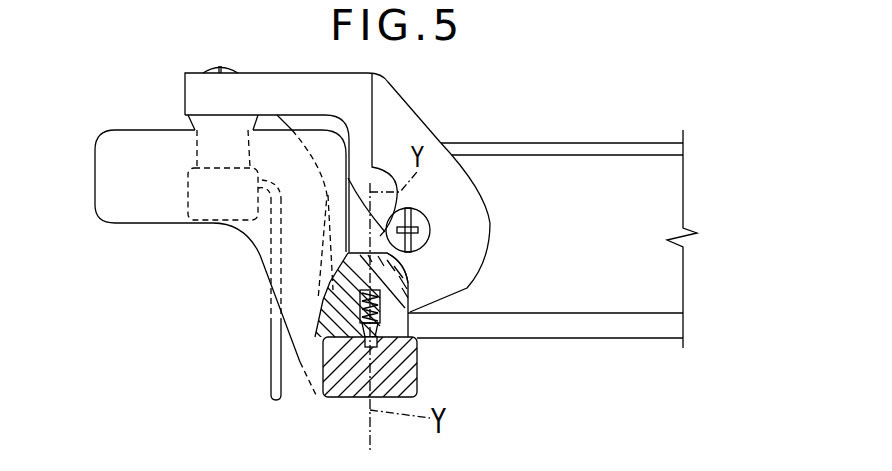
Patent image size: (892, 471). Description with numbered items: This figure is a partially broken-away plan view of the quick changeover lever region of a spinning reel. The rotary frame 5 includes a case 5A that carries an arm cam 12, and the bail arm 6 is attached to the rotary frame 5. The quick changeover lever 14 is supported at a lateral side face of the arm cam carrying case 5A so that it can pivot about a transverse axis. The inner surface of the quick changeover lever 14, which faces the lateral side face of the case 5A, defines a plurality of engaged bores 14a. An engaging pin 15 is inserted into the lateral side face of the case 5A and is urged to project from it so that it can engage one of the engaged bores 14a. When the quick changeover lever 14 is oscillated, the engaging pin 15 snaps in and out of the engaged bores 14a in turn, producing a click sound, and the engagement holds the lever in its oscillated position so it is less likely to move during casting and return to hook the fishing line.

The arm cam carrying case 5A is at (552, 201).
The rotary frame 5 is at (583, 141).
The arm cam 12 is at (183, 92).
The quick changeover lever 14 is at (147, 225).
The engaged bores 14a is at (463, 287).
The bail arm 6 is at (268, 371).
The engaging pin 15 is at (322, 397).